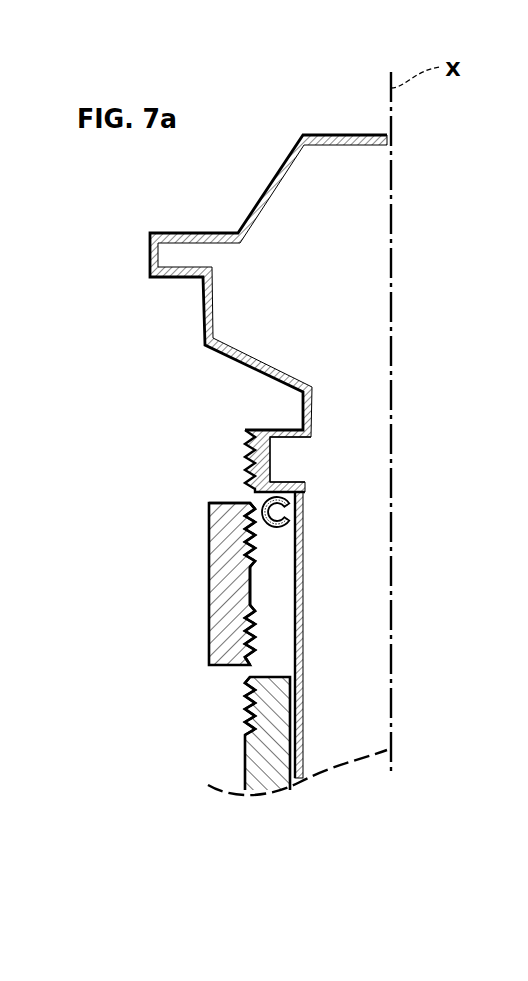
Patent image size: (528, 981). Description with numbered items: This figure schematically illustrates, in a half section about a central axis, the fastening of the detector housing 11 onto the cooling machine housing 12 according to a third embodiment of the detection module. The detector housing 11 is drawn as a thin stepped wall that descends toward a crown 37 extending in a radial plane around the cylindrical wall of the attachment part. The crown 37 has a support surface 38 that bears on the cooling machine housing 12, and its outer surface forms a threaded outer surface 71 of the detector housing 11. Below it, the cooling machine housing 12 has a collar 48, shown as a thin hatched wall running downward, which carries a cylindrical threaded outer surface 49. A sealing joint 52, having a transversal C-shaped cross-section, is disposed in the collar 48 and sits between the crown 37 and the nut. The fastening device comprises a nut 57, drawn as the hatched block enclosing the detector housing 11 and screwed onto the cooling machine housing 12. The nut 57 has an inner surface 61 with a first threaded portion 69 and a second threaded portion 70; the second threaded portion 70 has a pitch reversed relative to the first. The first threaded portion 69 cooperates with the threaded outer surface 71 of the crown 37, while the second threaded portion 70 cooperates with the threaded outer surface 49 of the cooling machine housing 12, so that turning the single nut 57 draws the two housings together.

The detector housing 11 is at (303, 413).
The cooling machine housing 12 is at (263, 765).
The crown 37 is at (275, 462).
The support surface 38 is at (256, 503).
The collar 48 is at (277, 703).
The threaded outer surface 49 is at (247, 715).
The sealing joint 52 is at (281, 511).
The nut 57 is at (206, 551).
The inner surface 61 is at (252, 587).
The first threaded portion 69 is at (252, 542).
The second threaded portion 70 is at (255, 640).
The threaded outer surface 71 is at (248, 485).